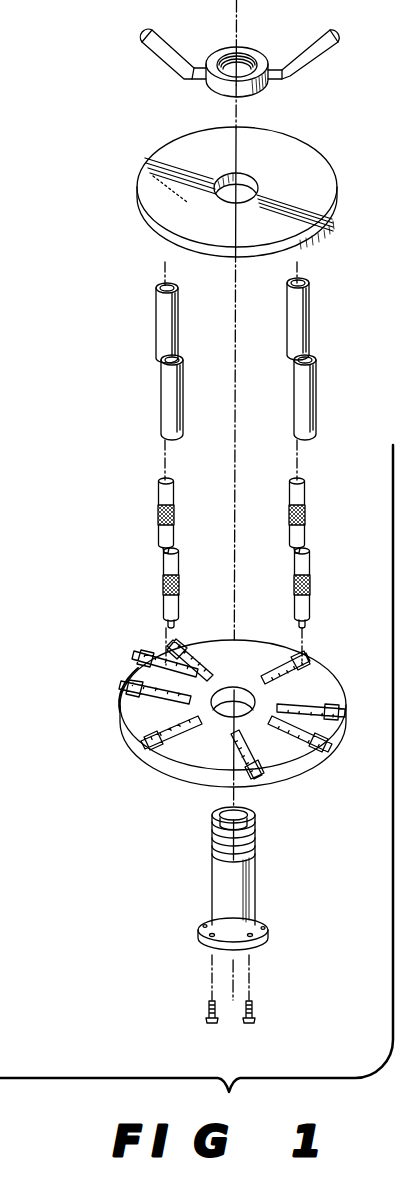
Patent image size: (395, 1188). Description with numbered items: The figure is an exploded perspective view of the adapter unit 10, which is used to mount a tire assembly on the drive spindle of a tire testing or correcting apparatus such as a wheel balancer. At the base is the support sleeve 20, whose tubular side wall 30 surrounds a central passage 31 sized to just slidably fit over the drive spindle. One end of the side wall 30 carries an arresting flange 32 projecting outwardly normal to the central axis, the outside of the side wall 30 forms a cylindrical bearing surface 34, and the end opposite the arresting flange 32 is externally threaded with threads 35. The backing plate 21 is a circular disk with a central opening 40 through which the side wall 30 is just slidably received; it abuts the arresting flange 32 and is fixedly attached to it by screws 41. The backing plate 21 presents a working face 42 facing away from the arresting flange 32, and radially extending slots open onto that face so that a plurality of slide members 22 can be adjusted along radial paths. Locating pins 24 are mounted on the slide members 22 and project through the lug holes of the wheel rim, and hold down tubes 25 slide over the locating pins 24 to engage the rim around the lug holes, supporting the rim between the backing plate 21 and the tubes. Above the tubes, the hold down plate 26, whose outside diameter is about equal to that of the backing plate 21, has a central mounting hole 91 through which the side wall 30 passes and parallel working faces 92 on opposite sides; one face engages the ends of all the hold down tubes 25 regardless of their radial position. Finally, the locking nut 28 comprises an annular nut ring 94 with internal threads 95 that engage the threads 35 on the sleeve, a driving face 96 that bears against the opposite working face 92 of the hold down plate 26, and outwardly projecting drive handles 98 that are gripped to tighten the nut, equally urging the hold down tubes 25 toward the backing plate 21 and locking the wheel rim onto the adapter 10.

The adapter unit 10 is at (77, 507).
The support sleeve 20 is at (239, 870).
The backing plate 21 is at (240, 713).
The slide members 22 is at (158, 668).
The locating pins 24 is at (148, 519).
The hold down tubes 25 is at (333, 401).
The hold down plate 26 is at (258, 203).
The locking nut 28 is at (231, 63).
The tubular side wall 30 is at (232, 857).
The central passage 31 is at (242, 812).
The arresting flange 32 is at (266, 932).
The cylindrical bearing surface 34 is at (215, 898).
The threads 35 is at (258, 846).
The central opening 40 is at (254, 702).
The screws 41 is at (253, 1013).
The working face 42 is at (333, 691).
The mounting hole 91 is at (234, 200).
The working faces 92 is at (239, 194).
The annular nut ring 94 is at (263, 57).
The threads 95 is at (240, 52).
The driving face 96 is at (247, 94).
The drive handles 98 is at (163, 55).